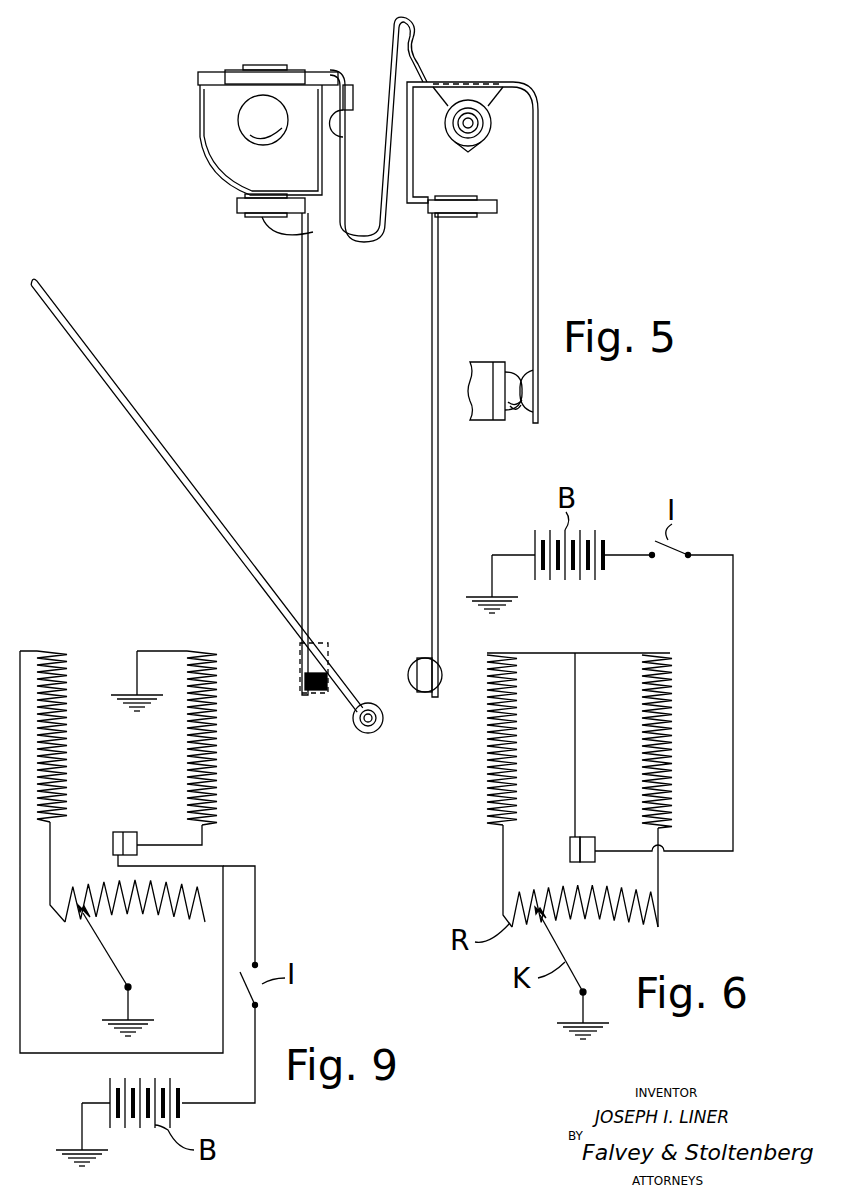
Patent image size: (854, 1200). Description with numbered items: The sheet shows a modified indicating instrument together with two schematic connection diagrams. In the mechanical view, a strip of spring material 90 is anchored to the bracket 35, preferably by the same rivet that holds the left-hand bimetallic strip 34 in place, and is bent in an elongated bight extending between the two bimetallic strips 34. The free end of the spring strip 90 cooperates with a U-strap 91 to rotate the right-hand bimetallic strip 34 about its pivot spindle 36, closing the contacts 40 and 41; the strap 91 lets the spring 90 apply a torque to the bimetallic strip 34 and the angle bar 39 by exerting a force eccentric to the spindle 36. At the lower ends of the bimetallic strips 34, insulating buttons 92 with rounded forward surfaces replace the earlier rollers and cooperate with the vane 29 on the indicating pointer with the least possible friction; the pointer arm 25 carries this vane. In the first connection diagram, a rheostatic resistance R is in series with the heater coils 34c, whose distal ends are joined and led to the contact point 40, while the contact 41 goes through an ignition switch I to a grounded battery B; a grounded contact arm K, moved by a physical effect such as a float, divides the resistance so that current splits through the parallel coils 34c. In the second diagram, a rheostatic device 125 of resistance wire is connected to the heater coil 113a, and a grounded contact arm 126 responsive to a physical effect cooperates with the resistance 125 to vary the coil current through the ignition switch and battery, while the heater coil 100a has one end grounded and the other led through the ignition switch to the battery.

In FIG. 5, the arm 25 is at (192, 475).
In FIG. 5, the vane 29 is at (340, 700).
In FIG. 5, the bimetallic strip 34 is at (302, 380).
In FIG. 5, the bracket 35 is at (207, 133).
In FIG. 5, the pivot spindle 36 is at (468, 120).
In FIG. 5, the angle bar 39 is at (538, 267).
In FIG. 5, the contact 40 is at (530, 372).
In FIG. 6, the contact 40 is at (570, 850).
In FIG. 5, the contact 41 is at (505, 372).
In FIG. 6, the contact 41 is at (590, 840).
In FIG. 5, the spring strip 90 is at (333, 70).
In FIG. 5, the U-strap 91 is at (418, 62).
In FIG. 5, the insulating button 92 is at (412, 658).
In FIG. 6, the heater coil 34c is at (487, 790).
In FIG. 9, the heater coil 100a is at (217, 790).
In FIG. 9, the heater coil 113a is at (62, 770).
In FIG. 9, the rheostatic device 125 is at (126, 895).
In FIG. 9, the contact arm 126 is at (105, 957).